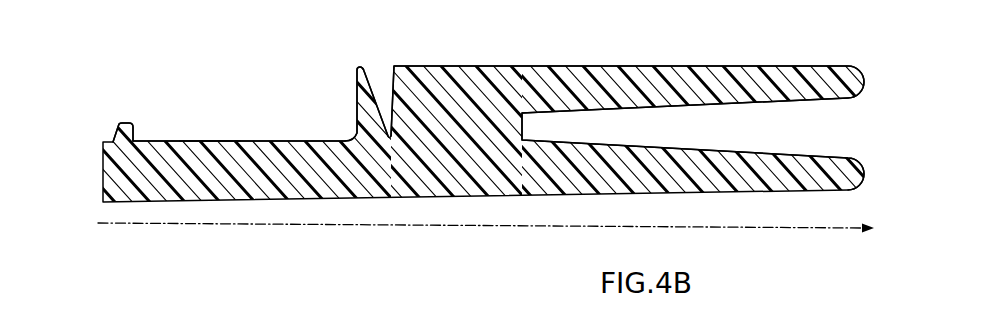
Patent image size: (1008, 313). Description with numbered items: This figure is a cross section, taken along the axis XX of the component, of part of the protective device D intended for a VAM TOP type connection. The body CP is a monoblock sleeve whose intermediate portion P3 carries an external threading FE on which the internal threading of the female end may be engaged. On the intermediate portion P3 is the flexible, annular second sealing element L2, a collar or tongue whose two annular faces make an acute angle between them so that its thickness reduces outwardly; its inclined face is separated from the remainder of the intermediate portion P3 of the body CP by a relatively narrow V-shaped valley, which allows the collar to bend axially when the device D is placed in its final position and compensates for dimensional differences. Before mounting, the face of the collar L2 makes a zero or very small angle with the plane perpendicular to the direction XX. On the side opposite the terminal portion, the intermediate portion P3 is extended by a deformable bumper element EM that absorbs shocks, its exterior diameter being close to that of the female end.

The protective device D is at (148, 66).
The external threading FE is at (116, 124).
The intermediate portion P3 is at (208, 116).
The body CP is at (306, 139).
The second sealing element L2 is at (357, 66).
The bumper element EM is at (565, 65).
The direction (axis) of the component XX is at (157, 226).